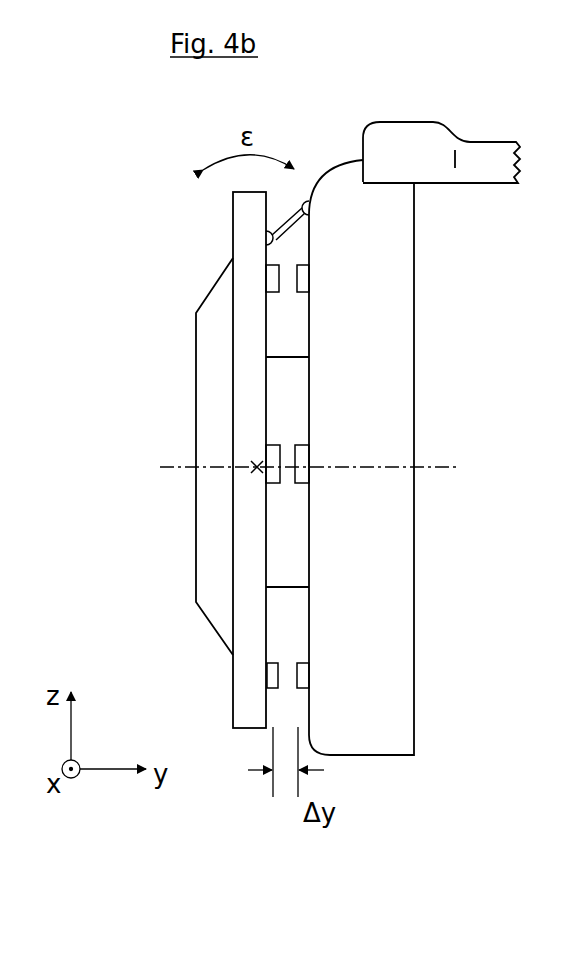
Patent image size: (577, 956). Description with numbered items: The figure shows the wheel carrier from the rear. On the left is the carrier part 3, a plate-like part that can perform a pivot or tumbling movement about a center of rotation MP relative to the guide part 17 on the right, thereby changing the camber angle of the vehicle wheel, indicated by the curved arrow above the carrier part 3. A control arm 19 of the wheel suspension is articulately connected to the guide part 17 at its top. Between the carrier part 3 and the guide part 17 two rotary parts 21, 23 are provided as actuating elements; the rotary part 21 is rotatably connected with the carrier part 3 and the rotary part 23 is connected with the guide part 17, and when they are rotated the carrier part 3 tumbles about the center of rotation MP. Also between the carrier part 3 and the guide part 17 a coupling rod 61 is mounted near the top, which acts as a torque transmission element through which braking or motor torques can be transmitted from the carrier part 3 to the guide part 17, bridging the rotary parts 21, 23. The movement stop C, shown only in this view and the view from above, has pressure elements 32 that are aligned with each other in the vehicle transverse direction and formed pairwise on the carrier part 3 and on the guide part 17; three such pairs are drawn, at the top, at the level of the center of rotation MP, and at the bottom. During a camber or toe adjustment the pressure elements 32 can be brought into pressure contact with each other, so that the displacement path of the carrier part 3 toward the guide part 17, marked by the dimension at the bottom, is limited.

The carrier part 3 is at (233, 234).
The guide part 17 is at (414, 399).
The control arm 19 is at (508, 142).
The coupling rod 61 is at (278, 229).
The rotary part 21 is at (402, 455).
The rotary part 23 is at (283, 357).
The pressure elements 32 is at (267, 283).
The movement stop C is at (122, 306).
The center of rotation MP is at (249, 472).